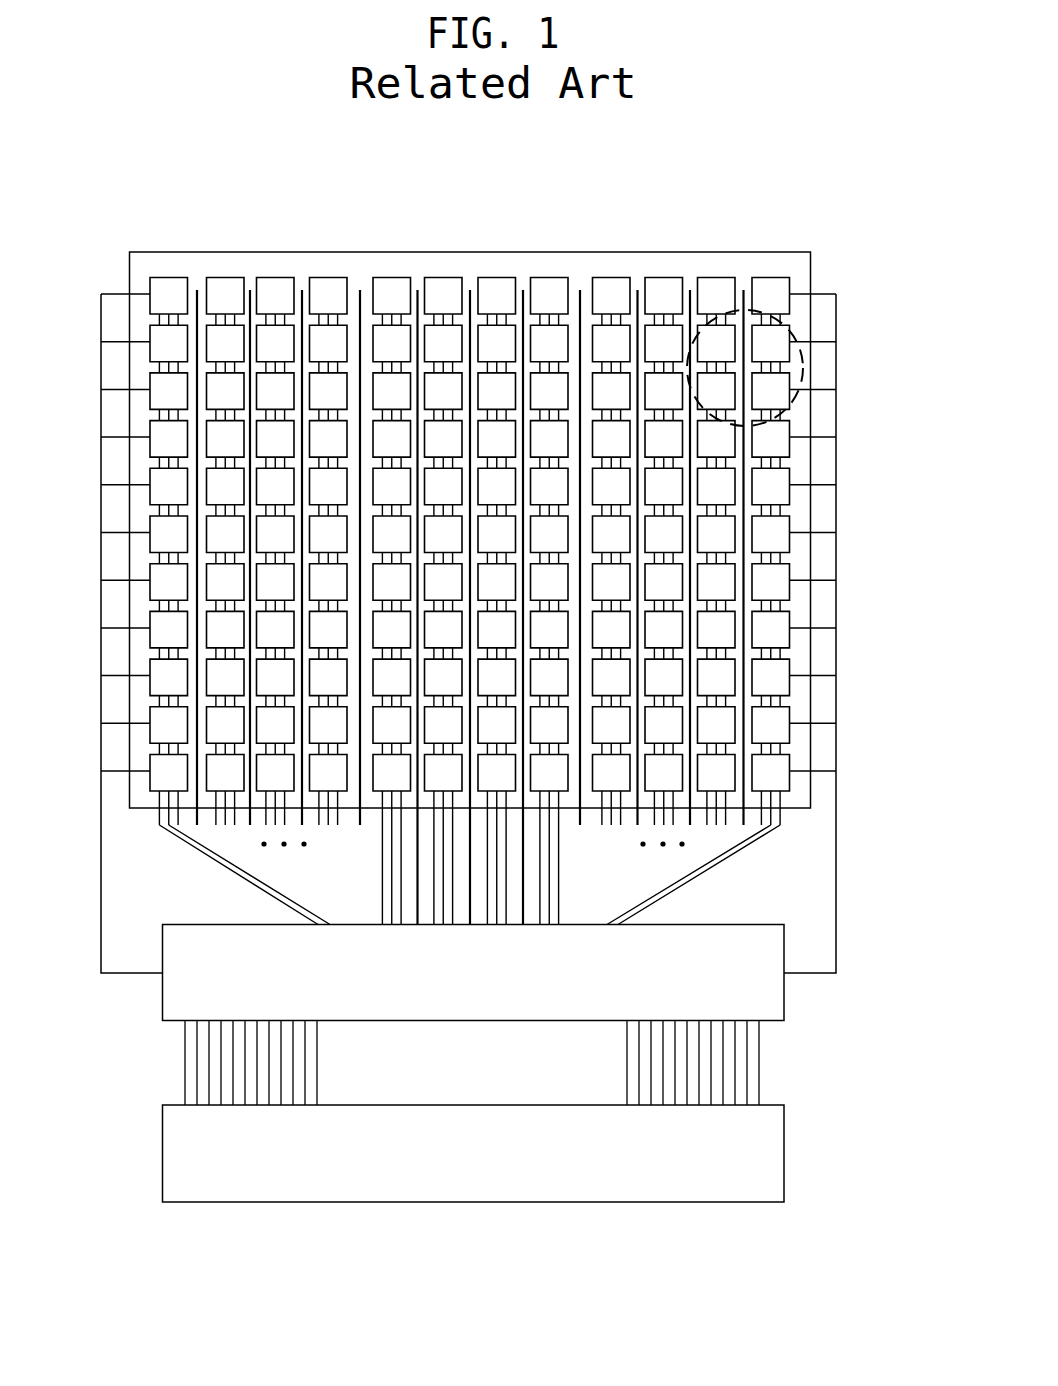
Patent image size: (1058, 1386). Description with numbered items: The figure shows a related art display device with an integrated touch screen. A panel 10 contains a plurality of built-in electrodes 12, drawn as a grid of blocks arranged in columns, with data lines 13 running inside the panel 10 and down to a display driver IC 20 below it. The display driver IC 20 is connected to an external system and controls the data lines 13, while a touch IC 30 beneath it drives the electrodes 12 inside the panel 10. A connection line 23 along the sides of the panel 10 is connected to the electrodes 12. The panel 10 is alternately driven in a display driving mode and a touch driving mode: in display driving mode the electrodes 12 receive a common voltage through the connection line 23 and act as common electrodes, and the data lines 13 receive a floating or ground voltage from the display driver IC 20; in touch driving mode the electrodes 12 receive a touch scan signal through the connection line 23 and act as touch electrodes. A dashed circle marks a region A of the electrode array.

The panel 10 is at (811, 252).
The electrodes 12 is at (662, 278).
The data lines 13 is at (786, 605).
The connection line 23 is at (836, 513).
The display driver IC 20 is at (784, 1001).
The touch IC 30 is at (784, 1153).
The enlarged region A is at (803, 362).